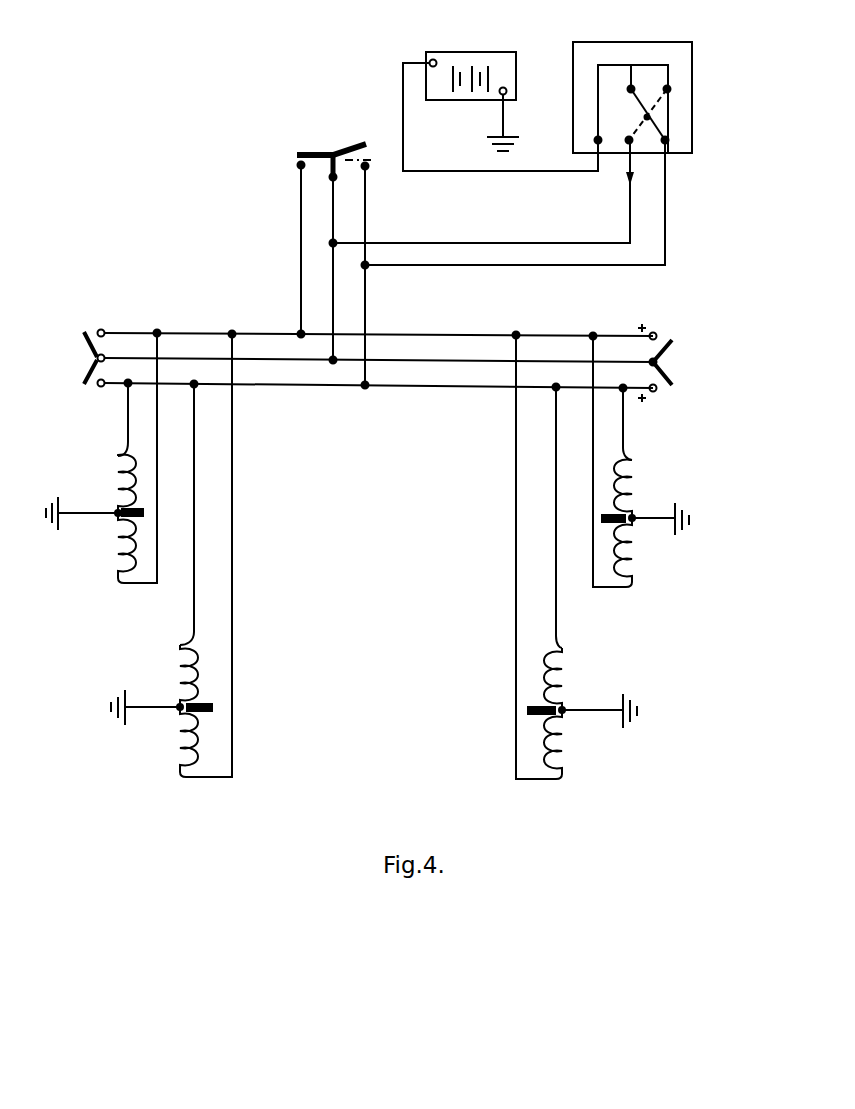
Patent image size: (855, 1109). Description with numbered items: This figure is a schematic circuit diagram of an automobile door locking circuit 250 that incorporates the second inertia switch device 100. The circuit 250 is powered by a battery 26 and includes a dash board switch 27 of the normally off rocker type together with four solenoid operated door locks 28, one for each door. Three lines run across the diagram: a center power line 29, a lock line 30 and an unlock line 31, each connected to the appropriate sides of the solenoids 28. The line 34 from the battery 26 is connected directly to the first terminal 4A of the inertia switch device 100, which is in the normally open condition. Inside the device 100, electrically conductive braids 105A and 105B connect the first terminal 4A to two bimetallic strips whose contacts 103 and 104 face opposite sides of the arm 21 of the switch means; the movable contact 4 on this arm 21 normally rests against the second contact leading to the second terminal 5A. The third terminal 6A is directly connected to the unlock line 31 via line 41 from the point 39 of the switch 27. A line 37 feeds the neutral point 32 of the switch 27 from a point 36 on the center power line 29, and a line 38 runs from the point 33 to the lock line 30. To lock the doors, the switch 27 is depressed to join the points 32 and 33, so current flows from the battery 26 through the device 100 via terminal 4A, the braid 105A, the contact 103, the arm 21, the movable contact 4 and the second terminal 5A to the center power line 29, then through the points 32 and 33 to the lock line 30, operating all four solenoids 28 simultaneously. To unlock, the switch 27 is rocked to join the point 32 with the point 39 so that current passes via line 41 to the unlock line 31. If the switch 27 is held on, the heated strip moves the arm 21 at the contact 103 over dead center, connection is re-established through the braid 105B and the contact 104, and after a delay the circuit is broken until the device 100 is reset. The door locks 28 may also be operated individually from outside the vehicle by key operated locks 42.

The battery 26 is at (496, 62).
The line 34 is at (404, 134).
The second inertia switch device 100 is at (684, 146).
The electrically conductive braid 105A is at (631, 68).
The electrically conductive braid 105B is at (668, 68).
The contact 103 is at (629, 89).
The contact 104 is at (669, 89).
The arm 21 is at (646, 101).
The first terminal 4A is at (596, 140).
The second terminal 5A is at (628, 138).
The third terminal 6A is at (676, 126).
The movable contact 4 is at (634, 150).
The dash board switch 27 is at (294, 166).
The neutral point 32 is at (331, 182).
The point 33 is at (301, 175).
The point 39 is at (367, 170).
The line 38 is at (300, 283).
The line 37 is at (332, 325).
The line 41 is at (366, 285).
The circuit 250 is at (226, 252).
The lock line 30 is at (197, 333).
The center power line 29 is at (277, 362).
The unlock line 31 is at (432, 389).
The point 36 is at (340, 388).
The key operated locks 42 is at (86, 366).
The solenoid operated door locks 28 is at (117, 535).